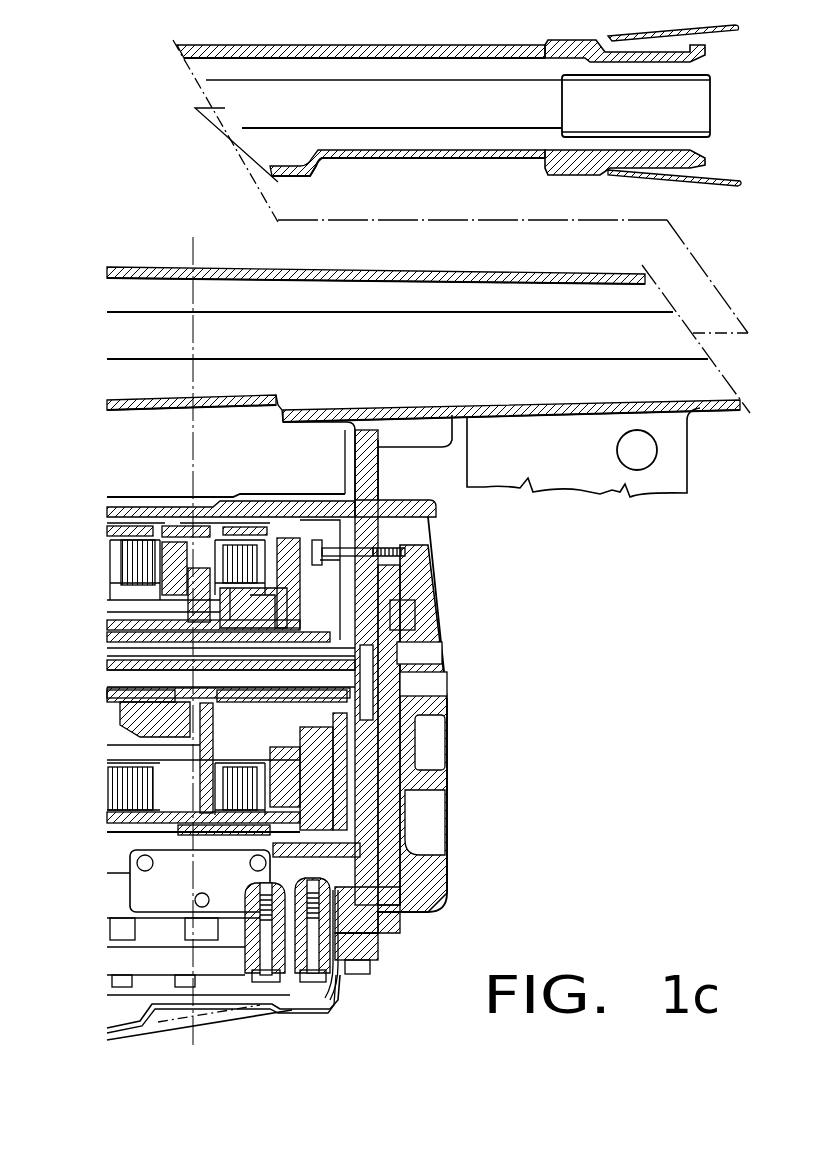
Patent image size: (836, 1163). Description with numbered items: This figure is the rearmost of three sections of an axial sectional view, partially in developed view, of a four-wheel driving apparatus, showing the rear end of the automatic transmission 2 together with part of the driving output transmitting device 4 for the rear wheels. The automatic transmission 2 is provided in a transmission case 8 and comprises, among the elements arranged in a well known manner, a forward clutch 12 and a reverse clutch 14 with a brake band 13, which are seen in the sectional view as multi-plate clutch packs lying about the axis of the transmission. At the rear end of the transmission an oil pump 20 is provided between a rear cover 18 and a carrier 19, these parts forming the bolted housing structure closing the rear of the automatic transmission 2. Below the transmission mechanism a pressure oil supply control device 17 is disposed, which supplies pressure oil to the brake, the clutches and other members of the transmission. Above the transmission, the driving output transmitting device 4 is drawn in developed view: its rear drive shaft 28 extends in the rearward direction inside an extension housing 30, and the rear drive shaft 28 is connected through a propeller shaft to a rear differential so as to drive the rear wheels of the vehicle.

The automatic transmission 2 is at (169, 494).
The driving output transmitting device 4 is at (152, 265).
The transmission case 8 is at (214, 501).
The forward clutch 12 is at (134, 525).
The brake band 13 is at (241, 525).
The reverse clutch 14 is at (286, 535).
The pressure oil supply control device 17 is at (228, 935).
The rear cover 18 is at (400, 615).
The carrier 19 is at (396, 477).
The oil pump 20 is at (380, 628).
The rear drive shaft 28 is at (357, 340).
The extension housing 30 is at (372, 250).